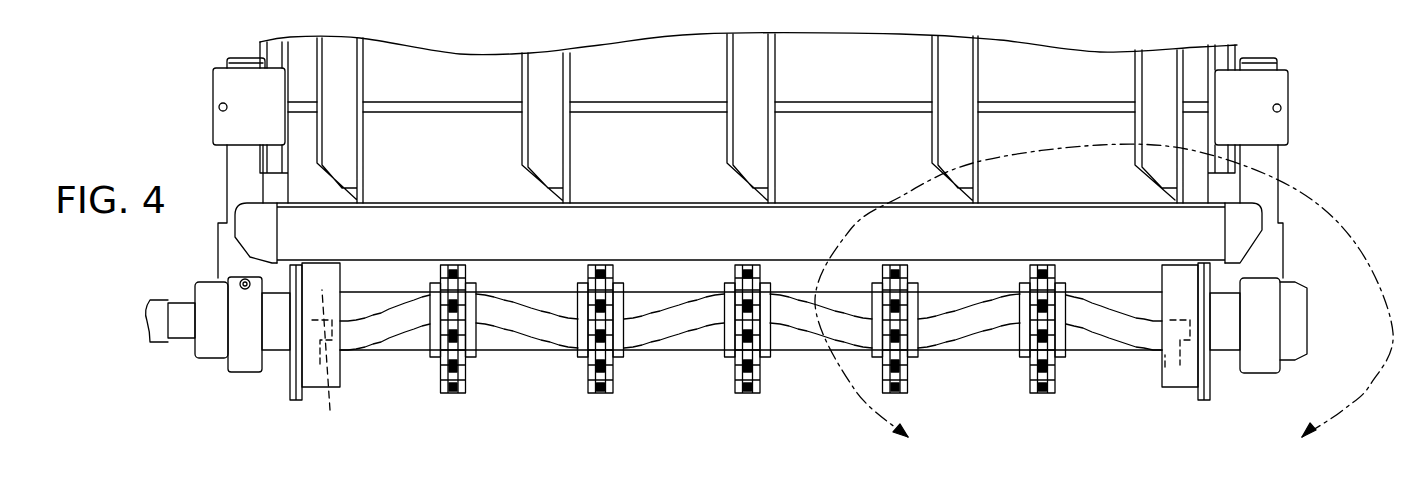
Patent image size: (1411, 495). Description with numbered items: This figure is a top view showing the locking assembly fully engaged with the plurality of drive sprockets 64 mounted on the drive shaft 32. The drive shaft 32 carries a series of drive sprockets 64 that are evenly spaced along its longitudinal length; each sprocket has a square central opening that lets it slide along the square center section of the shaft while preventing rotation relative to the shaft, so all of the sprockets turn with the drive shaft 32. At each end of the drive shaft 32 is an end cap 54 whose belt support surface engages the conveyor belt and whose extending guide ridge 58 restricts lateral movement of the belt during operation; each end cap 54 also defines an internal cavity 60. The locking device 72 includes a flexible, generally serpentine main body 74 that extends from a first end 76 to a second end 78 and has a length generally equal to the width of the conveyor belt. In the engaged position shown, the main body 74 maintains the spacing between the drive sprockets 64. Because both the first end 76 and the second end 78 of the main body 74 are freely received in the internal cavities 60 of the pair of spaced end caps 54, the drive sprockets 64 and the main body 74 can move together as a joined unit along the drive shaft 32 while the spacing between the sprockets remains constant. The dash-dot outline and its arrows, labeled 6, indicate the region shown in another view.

The section view indicator 6 is at (1104, 301).
The drive shaft 32 is at (751, 327).
The end cap 54 is at (343, 357).
The guide ridge 58 is at (293, 395).
The internal cavity 60 is at (333, 272).
The drive sprocket 64 is at (758, 282).
The locking device 72 is at (659, 302).
The main body 74 is at (546, 322).
The first end 76 is at (329, 365).
The second end 78 is at (1165, 367).